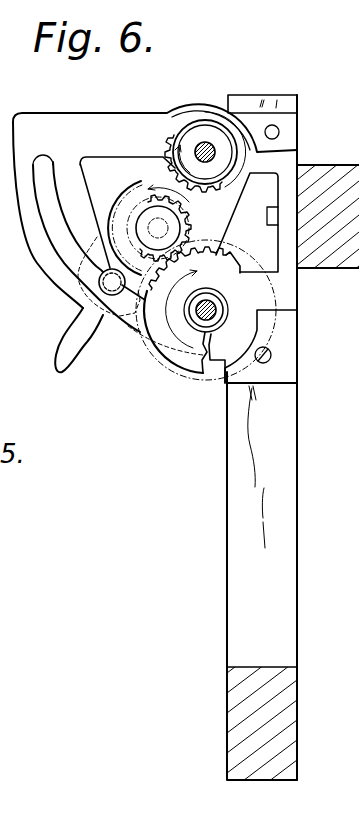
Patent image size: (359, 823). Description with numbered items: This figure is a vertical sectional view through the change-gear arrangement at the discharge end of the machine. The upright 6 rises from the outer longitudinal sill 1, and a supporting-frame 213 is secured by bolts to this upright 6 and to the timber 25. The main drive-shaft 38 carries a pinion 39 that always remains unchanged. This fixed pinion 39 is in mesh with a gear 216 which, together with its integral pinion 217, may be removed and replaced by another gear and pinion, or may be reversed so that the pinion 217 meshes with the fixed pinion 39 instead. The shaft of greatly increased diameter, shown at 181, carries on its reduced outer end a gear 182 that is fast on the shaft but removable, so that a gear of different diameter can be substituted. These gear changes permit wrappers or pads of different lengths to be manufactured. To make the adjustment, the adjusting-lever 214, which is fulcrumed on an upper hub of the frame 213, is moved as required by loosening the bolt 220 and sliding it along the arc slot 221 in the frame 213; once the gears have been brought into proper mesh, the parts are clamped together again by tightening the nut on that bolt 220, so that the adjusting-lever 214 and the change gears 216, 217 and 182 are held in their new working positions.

The supporting-frame 213 is at (155, 107).
The pinion 39 is at (205, 152).
The main drive-shaft 38 is at (215, 152).
The pinion 217 is at (147, 213).
The gear 216 is at (197, 212).
The timber 25 is at (328, 223).
The arc slot 221 is at (66, 247).
The bolt 220 is at (108, 285).
The adjusting-lever 214 is at (86, 345).
The gear 182 is at (175, 357).
The enlarged part of shaft 181 is at (226, 300).
The upright 6 is at (261, 545).
The sill 1 is at (227, 718).